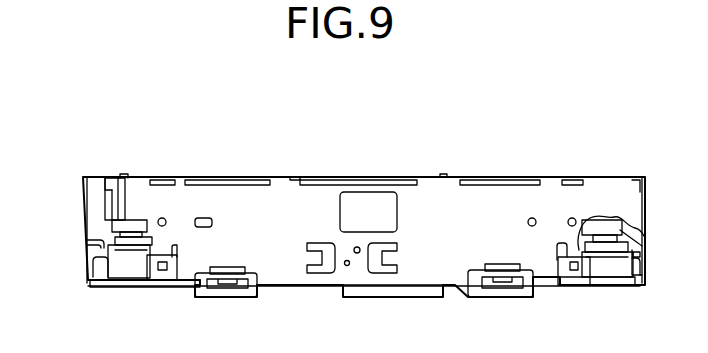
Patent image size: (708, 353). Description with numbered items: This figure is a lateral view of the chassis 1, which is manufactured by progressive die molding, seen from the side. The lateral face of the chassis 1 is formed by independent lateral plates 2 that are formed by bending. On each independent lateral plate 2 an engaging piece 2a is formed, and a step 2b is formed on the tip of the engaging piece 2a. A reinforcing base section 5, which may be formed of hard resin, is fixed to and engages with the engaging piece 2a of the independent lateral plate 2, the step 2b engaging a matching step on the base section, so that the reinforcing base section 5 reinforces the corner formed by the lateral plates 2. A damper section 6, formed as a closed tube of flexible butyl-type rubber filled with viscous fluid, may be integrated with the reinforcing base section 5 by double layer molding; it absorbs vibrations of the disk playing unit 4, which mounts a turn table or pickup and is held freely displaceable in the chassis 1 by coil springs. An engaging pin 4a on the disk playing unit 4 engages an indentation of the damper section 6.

The chassis 1 is at (80, 179).
The independent lateral plate 2 is at (82, 202).
The engaging piece 2a is at (163, 250).
The step 2b is at (92, 243).
The disk playing unit 4 is at (133, 226).
The engaging pin 4a is at (620, 229).
The reinforcing base section 5 is at (94, 266).
The damper section 6 is at (121, 250).